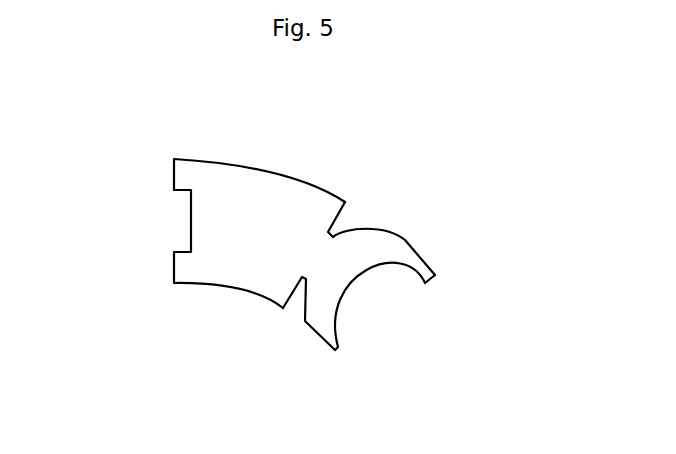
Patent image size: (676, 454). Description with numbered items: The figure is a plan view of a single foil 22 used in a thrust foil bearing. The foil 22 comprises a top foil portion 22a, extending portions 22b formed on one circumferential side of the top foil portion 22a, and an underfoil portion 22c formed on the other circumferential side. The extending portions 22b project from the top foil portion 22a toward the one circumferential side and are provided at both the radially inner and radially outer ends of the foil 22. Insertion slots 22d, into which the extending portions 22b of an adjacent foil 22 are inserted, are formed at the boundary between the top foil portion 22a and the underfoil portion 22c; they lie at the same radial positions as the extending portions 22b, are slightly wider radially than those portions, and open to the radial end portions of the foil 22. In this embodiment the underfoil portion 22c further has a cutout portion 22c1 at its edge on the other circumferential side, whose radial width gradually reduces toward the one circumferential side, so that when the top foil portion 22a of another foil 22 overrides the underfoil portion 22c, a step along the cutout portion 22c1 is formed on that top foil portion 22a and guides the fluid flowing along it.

The foil 22 is at (305, 147).
The top foil portion 22a is at (240, 252).
The extending portions 22b is at (175, 180).
The underfoil portion 22c is at (370, 246).
The cutout portion 22c1 is at (357, 277).
The insertion slots 22d is at (297, 298).